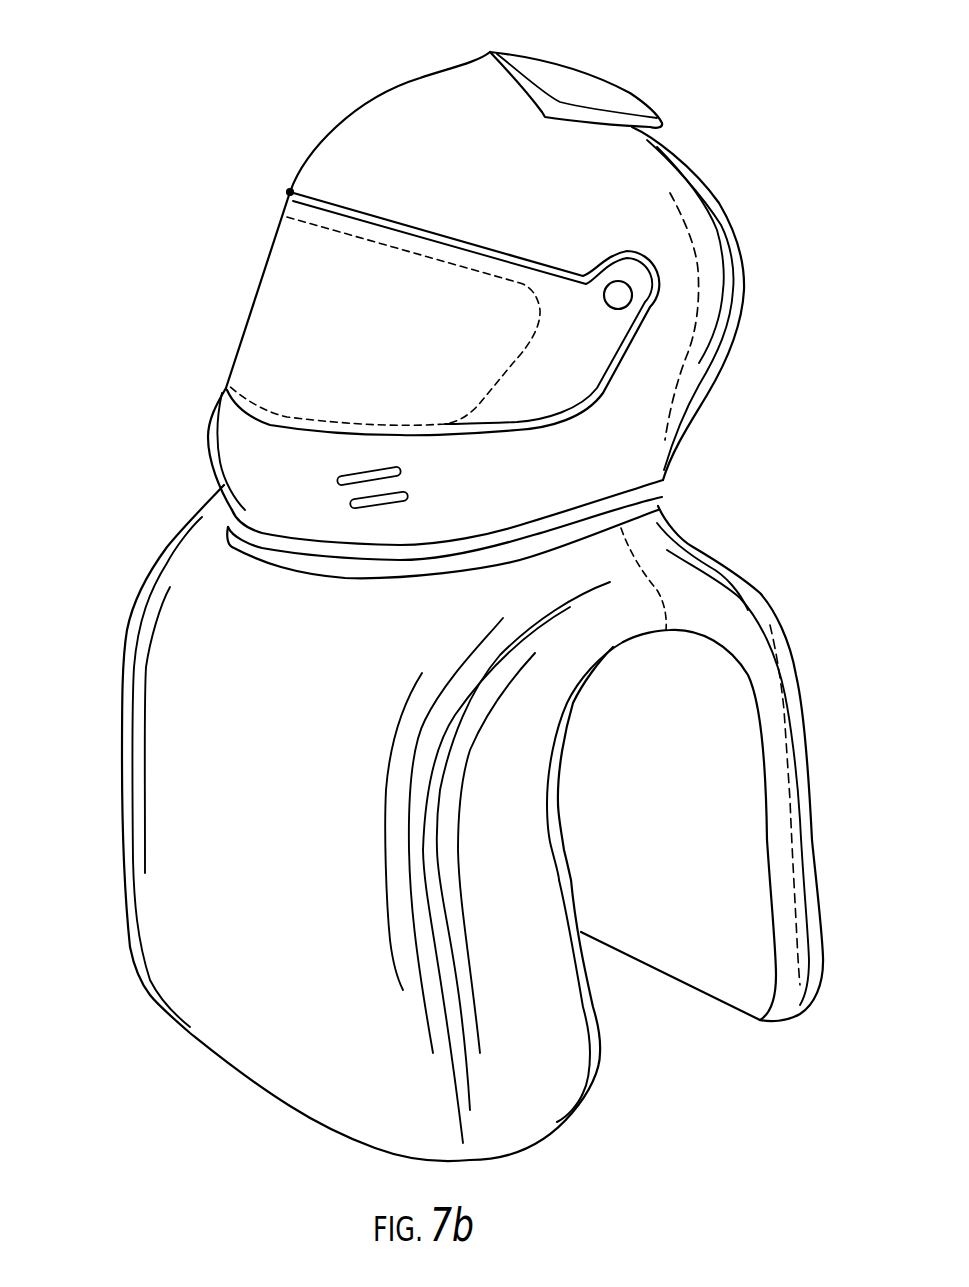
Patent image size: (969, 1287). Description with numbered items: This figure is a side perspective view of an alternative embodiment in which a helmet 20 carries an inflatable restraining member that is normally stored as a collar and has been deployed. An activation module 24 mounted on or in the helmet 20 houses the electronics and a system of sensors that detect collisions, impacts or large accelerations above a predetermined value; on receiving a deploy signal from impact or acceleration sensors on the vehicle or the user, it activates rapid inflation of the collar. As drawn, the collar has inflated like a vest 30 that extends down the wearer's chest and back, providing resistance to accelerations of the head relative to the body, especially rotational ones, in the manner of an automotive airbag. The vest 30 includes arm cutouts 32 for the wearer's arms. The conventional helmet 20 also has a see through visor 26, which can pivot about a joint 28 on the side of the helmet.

The helmet 20 is at (408, 104).
The activation module 24 is at (583, 78).
The see through visor 26 is at (287, 294).
The joint 28 is at (620, 294).
The vest 30 is at (170, 842).
The arm cutouts 32 is at (727, 641).